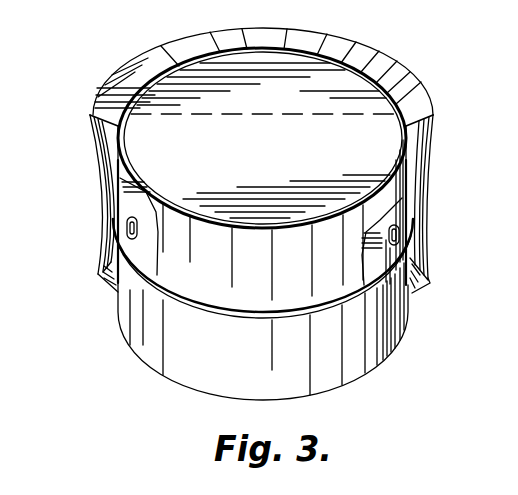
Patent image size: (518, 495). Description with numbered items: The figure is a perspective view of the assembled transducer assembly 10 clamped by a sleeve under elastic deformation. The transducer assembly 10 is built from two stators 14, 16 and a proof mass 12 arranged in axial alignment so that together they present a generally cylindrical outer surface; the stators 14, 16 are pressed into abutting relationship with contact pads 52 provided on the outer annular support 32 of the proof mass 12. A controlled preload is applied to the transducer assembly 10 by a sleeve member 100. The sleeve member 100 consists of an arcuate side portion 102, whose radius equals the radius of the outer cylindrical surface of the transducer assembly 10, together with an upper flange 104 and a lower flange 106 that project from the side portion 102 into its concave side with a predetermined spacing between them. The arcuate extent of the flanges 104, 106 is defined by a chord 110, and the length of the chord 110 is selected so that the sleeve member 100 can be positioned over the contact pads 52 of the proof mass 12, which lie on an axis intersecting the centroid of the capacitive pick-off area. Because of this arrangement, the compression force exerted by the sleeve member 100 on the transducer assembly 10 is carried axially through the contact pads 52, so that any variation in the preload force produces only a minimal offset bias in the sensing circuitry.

The transducer assembly 10 is at (478, 264).
The proof mass 12 is at (221, 319).
The stator 14 is at (396, 203).
The stator 16 is at (367, 357).
The outer annular support 32 is at (167, 297).
The contact pads 52 is at (127, 228).
The sleeve member 100 is at (433, 101).
The side portion 102 is at (431, 155).
The upper flange 104 is at (377, 57).
The lower flange 106 is at (417, 285).
The chord 110 is at (273, 113).